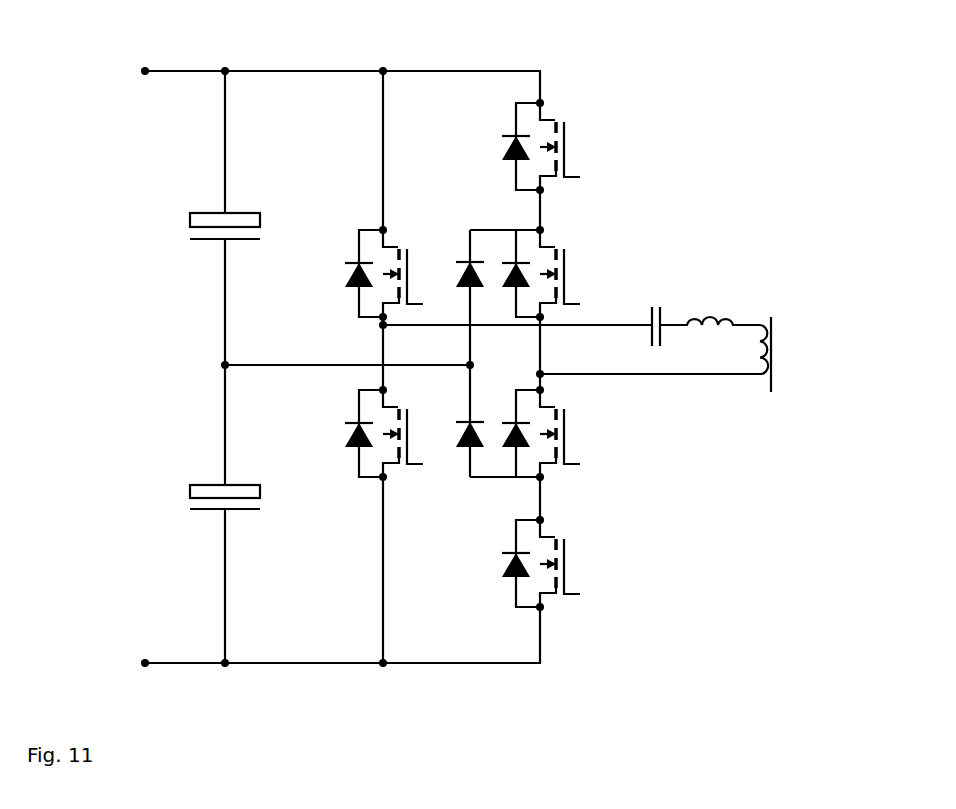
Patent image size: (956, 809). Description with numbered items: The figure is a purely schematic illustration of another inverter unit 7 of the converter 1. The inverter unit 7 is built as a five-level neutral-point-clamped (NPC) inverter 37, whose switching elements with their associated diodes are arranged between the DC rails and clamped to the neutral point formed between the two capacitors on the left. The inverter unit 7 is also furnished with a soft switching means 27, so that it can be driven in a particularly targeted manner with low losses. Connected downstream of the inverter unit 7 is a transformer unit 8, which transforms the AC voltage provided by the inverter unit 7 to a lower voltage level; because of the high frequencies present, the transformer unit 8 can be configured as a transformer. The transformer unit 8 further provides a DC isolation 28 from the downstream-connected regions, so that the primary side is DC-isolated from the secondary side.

The converter circuit 1 is at (68, 46).
The inverter unit 7 is at (88, 116).
The five-level neutral-point-clamped inverter 37 is at (77, 343).
The transformer unit 8 is at (734, 286).
The soft switching means 27 is at (748, 418).
The DC isolation 28 is at (778, 325).